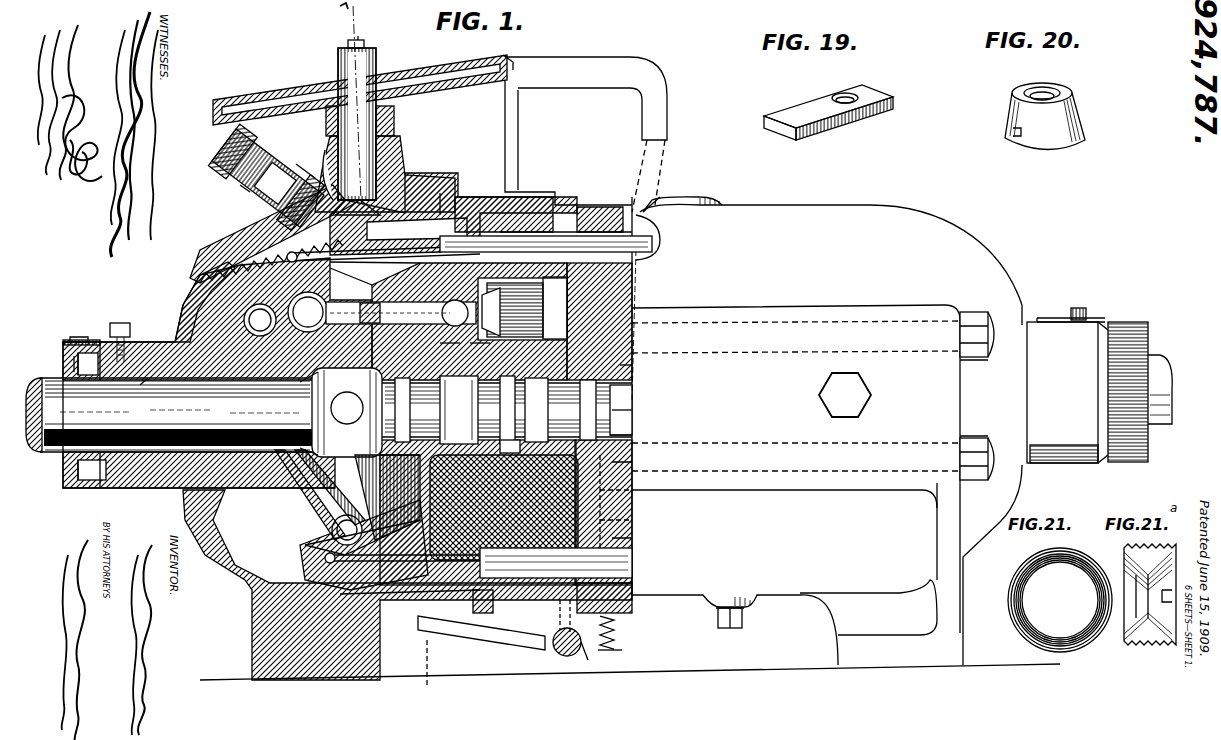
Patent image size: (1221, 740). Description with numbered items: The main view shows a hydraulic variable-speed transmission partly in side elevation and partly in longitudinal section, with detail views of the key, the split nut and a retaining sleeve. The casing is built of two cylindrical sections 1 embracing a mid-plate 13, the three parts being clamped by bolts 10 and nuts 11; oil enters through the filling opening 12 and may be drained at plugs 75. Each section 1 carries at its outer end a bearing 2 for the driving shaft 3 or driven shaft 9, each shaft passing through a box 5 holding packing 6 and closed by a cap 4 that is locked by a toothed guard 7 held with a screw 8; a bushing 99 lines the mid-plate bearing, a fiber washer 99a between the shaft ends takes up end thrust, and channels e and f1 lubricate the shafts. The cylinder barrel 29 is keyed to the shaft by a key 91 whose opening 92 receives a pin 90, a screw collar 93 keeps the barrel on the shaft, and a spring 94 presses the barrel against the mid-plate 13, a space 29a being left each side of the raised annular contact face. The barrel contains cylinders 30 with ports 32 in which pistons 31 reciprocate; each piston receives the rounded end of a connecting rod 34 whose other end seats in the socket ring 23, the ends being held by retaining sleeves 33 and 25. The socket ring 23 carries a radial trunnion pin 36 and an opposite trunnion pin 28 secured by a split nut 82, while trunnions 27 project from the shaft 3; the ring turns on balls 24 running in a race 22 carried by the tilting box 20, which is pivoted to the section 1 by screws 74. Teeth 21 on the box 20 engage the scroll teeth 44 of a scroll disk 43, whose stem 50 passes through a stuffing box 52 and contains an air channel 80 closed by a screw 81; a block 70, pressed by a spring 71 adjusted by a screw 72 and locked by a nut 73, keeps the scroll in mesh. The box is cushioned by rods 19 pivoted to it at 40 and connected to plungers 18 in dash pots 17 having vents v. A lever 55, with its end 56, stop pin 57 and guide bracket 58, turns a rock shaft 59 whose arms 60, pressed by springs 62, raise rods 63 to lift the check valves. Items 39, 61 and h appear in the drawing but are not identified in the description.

In FIG. 1, the casing section 1 is at (621, 438).
In FIG. 1, the bearing 2 is at (140, 490).
In FIG. 1, the shaft 3 is at (169, 415).
In FIG. 1, the cap 4 is at (65, 345).
In FIG. 1, the box 5 is at (66, 365).
In FIG. 1, the packing 6 is at (88, 468).
In FIG. 1, the guard 7 is at (1114, 314).
In FIG. 1, the screw 8 is at (598, 326).
In FIG. 1, the shaft 9 is at (1157, 356).
In FIG. 1, the bolt 10 is at (987, 396).
In FIG. 1, the nut 11 is at (974, 392).
In FIG. 1, the filling opening 12 is at (667, 195).
In FIG. 1, the mid-plate 13 is at (628, 522).
In FIG. 1, the dash pot 17 is at (546, 407).
In FIG. 1, the plunger 18 is at (530, 235).
In FIG. 1, the rod 19 is at (405, 427).
In FIG. 1, the tilting box 20 is at (308, 566).
In FIG. 1, the teeth 21 is at (232, 240).
In FIG. 1, the race 22 is at (300, 480).
In FIG. 1, the socket ring 23 is at (312, 273).
In FIG. 1, the ball 24 is at (330, 525).
In FIG. 1, the retaining sleeve 25 is at (330, 290).
In FIG. 21, the retaining sleeve 25 is at (1088, 638).
In FIG. 21A, the retaining sleeve 25 is at (1165, 645).
In FIG. 1, the trunnion 27 is at (347, 412).
In FIG. 1, the trunnion pin 28 is at (387, 497).
In FIG. 1, the cylinder barrel 29 is at (479, 512).
In FIG. 1, the space 29a is at (640, 538).
In FIG. 1, the cylinder 30 is at (522, 308).
In FIG. 1, the piston 31 is at (498, 312).
In FIG. 1, the port 32 is at (640, 292).
In FIG. 1, the retaining sleeve 33 is at (469, 321).
In FIG. 1, the connecting rod 34 is at (401, 313).
In FIG. 1, the trunnion pin 36 is at (308, 380).
In FIG. 1, the block 39 is at (413, 457).
In FIG. 1, the pivot 40 is at (383, 412).
In FIG. 1, the scroll disk 43 is at (425, 180).
In FIG. 1, the scroll teeth 44 is at (440, 190).
In FIG. 1, the stem 50 is at (370, 109).
In FIG. 1, the stuffing box 52 is at (374, 119).
In FIG. 1, the lever 55 is at (600, 228).
In FIG. 1, the lever end 56 is at (512, 62).
In FIG. 1, the stop pin 57 is at (498, 96).
In FIG. 1, the guide bracket 58 is at (568, 142).
In FIG. 1, the rock shaft 59 is at (499, 643).
In FIG. 1, the arm 60 is at (592, 656).
In FIG. 1, the stem 61 is at (558, 613).
In FIG. 1, the spring 62 is at (614, 628).
In FIG. 1, the rod 63 is at (624, 649).
In FIG. 1, the block 70 is at (335, 170).
In FIG. 1, the spring 71 is at (306, 166).
In FIG. 1, the screw 72 is at (220, 150).
In FIG. 1, the nut 73 is at (238, 187).
In FIG. 1, the screw 74 is at (845, 395).
In FIG. 1, the plug 75 is at (733, 624).
In FIG. 1, the channel 80 is at (332, 175).
In FIG. 1, the screw 81 is at (362, 40).
In FIG. 1, the split nut 82 is at (362, 553).
In FIG. 20, the split nut 82 is at (1032, 116).
In FIG. 1, the pin 90 is at (479, 350).
In FIG. 1, the key 91 is at (450, 350).
In FIG. 19, the key 91 is at (828, 115).
In FIG. 19, the opening 92 is at (838, 94).
In FIG. 1, the screw collar 93 is at (510, 447).
In FIG. 1, the spring 94 is at (440, 362).
In FIG. 1, the bushing 99 is at (640, 433).
In FIG. 1, the fiber washer 99a is at (640, 410).
In FIG. 1, the channel e is at (630, 371).
In FIG. 1, the vent v is at (662, 244).
In FIG. 1, the channel f1 is at (137, 395).
In FIG. 1, the line h is at (422, 671).